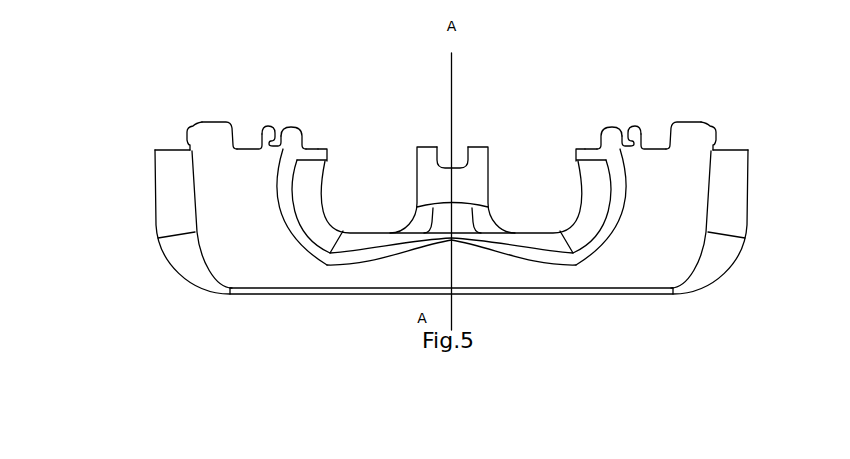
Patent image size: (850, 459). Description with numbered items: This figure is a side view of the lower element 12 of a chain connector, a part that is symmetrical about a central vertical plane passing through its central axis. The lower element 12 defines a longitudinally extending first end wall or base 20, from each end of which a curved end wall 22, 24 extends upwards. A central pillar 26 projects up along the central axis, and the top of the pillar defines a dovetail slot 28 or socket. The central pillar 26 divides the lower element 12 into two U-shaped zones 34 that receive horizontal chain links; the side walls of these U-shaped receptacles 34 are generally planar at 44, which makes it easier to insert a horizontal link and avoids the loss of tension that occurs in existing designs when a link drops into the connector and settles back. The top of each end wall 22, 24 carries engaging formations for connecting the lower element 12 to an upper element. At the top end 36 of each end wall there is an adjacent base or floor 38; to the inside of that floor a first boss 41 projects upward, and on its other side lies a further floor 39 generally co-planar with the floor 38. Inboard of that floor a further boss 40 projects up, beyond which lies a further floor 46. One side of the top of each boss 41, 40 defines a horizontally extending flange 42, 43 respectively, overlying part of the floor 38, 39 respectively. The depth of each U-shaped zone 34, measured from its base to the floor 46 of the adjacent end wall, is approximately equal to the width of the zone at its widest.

The lower element 12 is at (697, 302).
The base 20 is at (528, 278).
The end wall 22 is at (735, 208).
The end wall 24 is at (173, 215).
The central pillar 26 is at (468, 190).
The dovetail slot 28 is at (452, 147).
The U-shaped zone 34 is at (363, 206).
The top end 36 is at (160, 162).
The floor 38 is at (173, 148).
The floor 39 is at (243, 147).
The boss 40 is at (278, 141).
The first boss 41 is at (213, 141).
The flange 42 is at (193, 118).
The flange 43 is at (263, 125).
The planar side wall 44 is at (327, 147).
The floor 46 is at (310, 147).